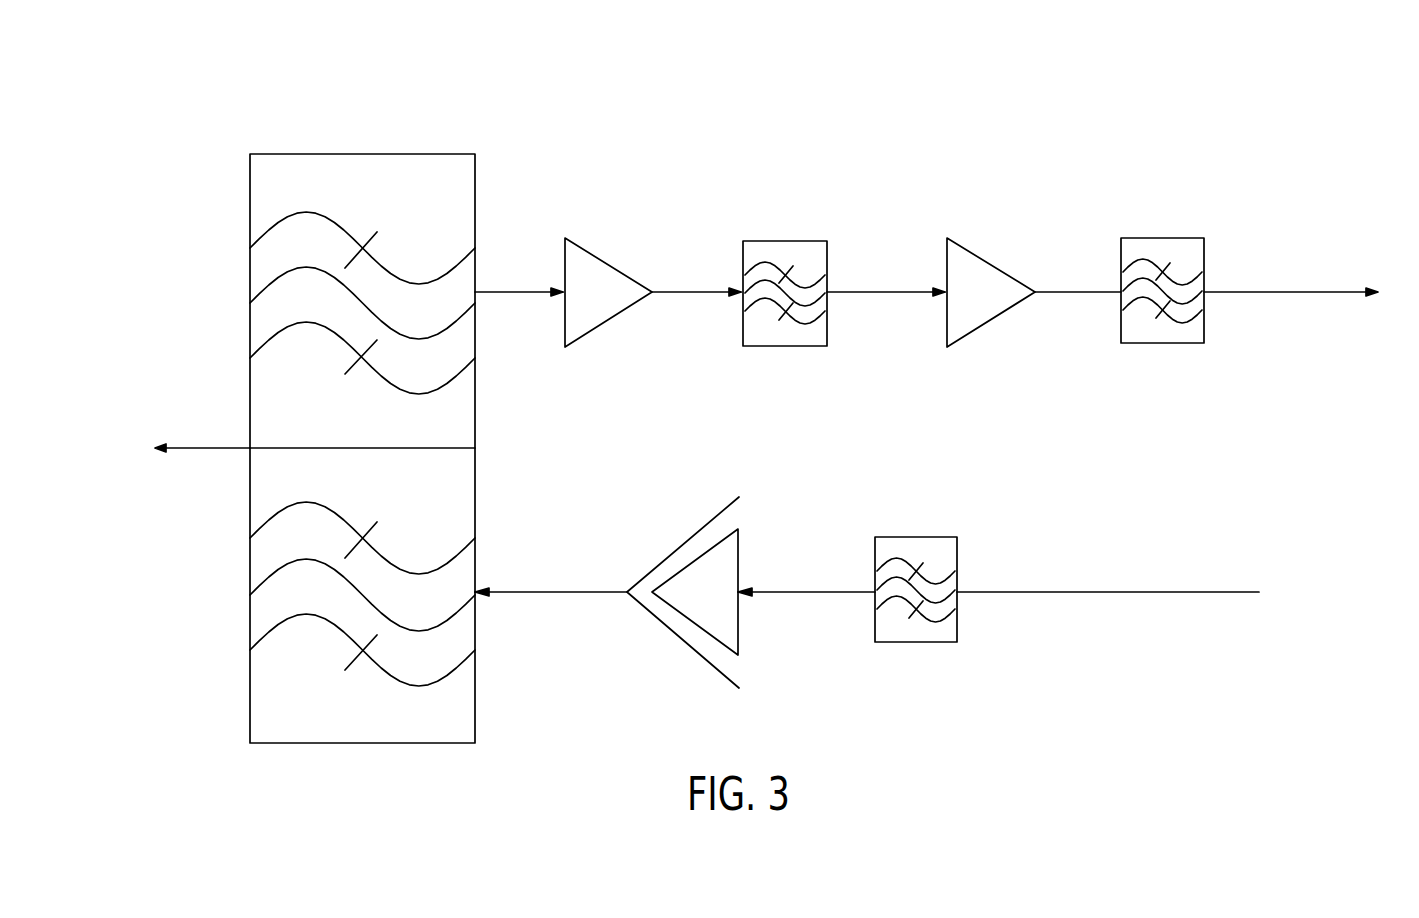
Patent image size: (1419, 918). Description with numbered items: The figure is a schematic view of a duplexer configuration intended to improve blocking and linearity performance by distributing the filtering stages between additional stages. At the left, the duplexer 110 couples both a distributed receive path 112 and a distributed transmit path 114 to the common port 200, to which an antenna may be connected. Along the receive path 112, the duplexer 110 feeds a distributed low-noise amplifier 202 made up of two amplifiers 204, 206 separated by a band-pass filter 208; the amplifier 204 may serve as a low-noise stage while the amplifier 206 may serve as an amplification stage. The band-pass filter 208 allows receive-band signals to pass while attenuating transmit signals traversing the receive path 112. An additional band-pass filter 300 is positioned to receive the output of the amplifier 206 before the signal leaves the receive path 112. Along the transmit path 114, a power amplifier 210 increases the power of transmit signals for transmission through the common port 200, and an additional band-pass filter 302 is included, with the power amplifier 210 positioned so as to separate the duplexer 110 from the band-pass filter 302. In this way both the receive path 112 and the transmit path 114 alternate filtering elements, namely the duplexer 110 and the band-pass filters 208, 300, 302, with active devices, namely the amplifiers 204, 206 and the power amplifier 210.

The duplexer 110 is at (430, 154).
The common port 200 is at (158, 455).
The distributed low-noise amplifier 202 is at (922, 182).
The amplifier 204 is at (600, 258).
The amplifier 206 is at (988, 263).
The band-pass filter 208 is at (783, 241).
The band-pass filter 300 is at (1160, 238).
The receive path 112 is at (1270, 292).
The transmit path 114 is at (1122, 592).
The band-pass filter 302 is at (912, 537).
The power amplifier 210 is at (672, 553).